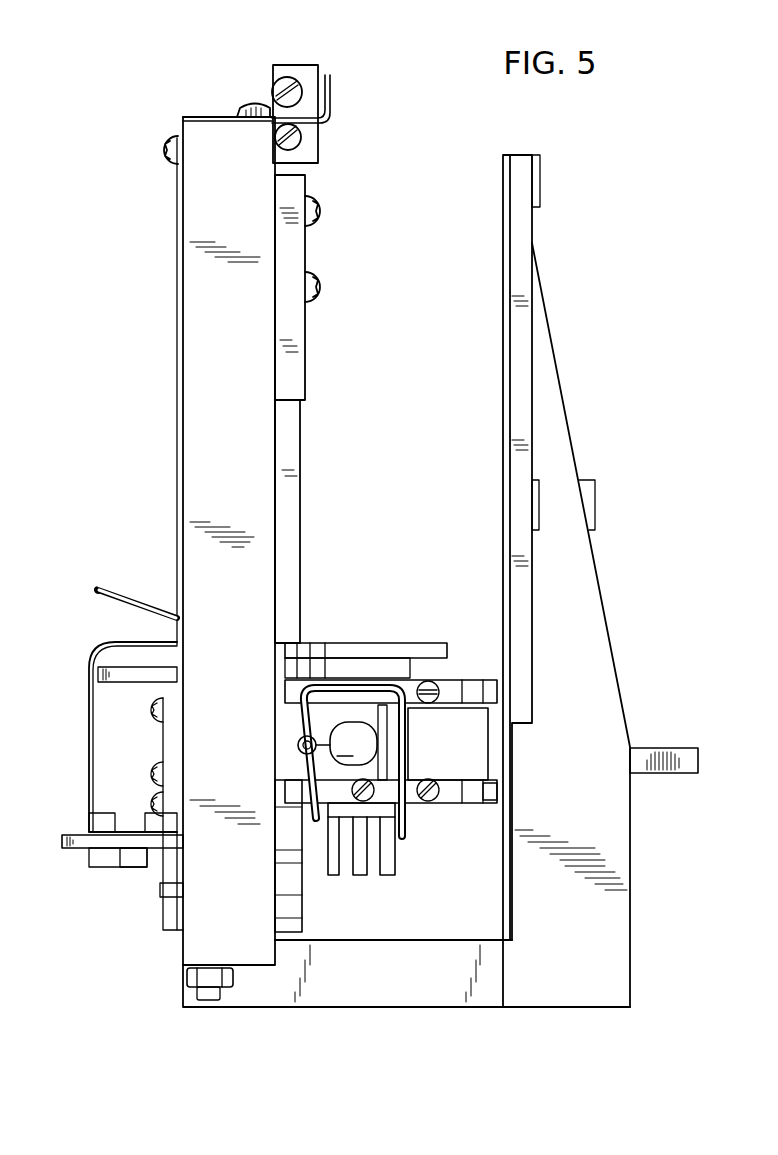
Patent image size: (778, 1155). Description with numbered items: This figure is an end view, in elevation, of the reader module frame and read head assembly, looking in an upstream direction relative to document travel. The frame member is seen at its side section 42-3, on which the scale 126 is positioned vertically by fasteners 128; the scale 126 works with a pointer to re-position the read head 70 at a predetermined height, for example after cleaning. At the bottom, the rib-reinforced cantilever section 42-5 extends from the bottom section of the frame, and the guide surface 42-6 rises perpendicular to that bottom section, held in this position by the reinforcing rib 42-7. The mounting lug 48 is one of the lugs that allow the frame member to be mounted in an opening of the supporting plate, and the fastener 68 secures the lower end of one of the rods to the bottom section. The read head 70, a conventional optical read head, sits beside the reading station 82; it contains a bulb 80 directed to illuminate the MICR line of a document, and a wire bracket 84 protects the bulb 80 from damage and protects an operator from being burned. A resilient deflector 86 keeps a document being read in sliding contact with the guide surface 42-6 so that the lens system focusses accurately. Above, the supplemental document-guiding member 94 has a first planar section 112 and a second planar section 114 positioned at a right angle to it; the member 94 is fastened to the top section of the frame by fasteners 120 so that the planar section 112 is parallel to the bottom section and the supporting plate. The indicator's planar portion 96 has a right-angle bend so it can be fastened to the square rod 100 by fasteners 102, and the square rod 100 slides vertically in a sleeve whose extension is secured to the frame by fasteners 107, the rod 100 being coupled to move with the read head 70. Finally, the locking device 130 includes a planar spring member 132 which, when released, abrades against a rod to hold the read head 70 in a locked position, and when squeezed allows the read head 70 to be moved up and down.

The side section 42-3 is at (197, 445).
The rib-reinforced cantilever section 42-5 is at (380, 997).
The guide surface 42-6 is at (503, 182).
The rib 42-7 is at (590, 598).
The mounting lug 48 is at (648, 748).
The fastener 68 is at (190, 975).
The read head 70 is at (78, 722).
The bulb 80 is at (362, 744).
The reading station 82 is at (466, 658).
The wire bracket 84 is at (405, 733).
The resilient deflector 86 is at (496, 800).
The supplemental document-guiding member 94 is at (206, 108).
The planar portion 96 is at (308, 66).
The square rod 100 is at (290, 447).
The fasteners 102 is at (286, 84).
The fasteners 107 is at (320, 290).
The first planar section 112 is at (215, 124).
The second planar section 114 is at (332, 84).
The fasteners 120 is at (247, 103).
The scale 126 is at (177, 373).
The fasteners 128 is at (170, 158).
The locking device 130 is at (134, 582).
The planar spring member 132 is at (98, 598).